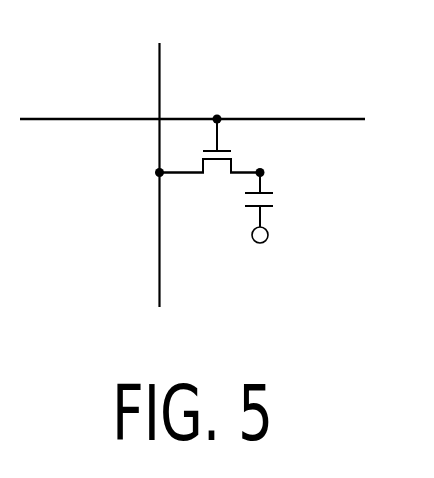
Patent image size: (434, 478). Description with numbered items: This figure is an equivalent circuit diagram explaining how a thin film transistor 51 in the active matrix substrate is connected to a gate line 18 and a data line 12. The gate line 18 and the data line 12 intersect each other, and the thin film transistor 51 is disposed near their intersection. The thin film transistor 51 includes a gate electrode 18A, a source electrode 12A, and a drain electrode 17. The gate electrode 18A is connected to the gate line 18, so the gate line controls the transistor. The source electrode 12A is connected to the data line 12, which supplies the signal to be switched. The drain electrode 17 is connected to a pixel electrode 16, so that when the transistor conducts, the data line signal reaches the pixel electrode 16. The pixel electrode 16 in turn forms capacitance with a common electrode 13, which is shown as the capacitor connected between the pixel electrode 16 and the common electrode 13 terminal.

The data line 12 is at (161, 59).
The gate line 18 is at (62, 118).
The source electrode 12A is at (192, 163).
The gate electrode 18A is at (230, 143).
The drain electrode 17 is at (238, 167).
The pixel electrode 16 is at (264, 172).
The common electrode 13 is at (268, 235).
The thin film transistor 51 is at (210, 185).